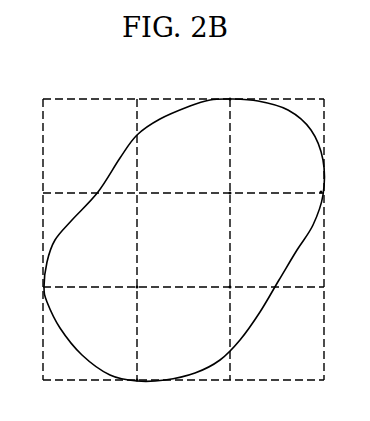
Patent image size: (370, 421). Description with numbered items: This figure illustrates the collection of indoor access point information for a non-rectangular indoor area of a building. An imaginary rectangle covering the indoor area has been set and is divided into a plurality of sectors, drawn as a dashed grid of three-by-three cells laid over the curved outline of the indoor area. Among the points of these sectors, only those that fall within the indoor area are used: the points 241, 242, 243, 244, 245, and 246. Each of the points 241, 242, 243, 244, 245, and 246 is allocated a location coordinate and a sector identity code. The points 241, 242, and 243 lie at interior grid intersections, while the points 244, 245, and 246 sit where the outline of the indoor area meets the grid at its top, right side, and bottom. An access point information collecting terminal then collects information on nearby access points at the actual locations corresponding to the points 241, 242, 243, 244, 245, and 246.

The point 241 is at (138, 286).
The point 242 is at (229, 192).
The point 243 is at (229, 286).
The point 244 is at (231, 100).
The point 245 is at (320, 190).
The point 246 is at (138, 379).